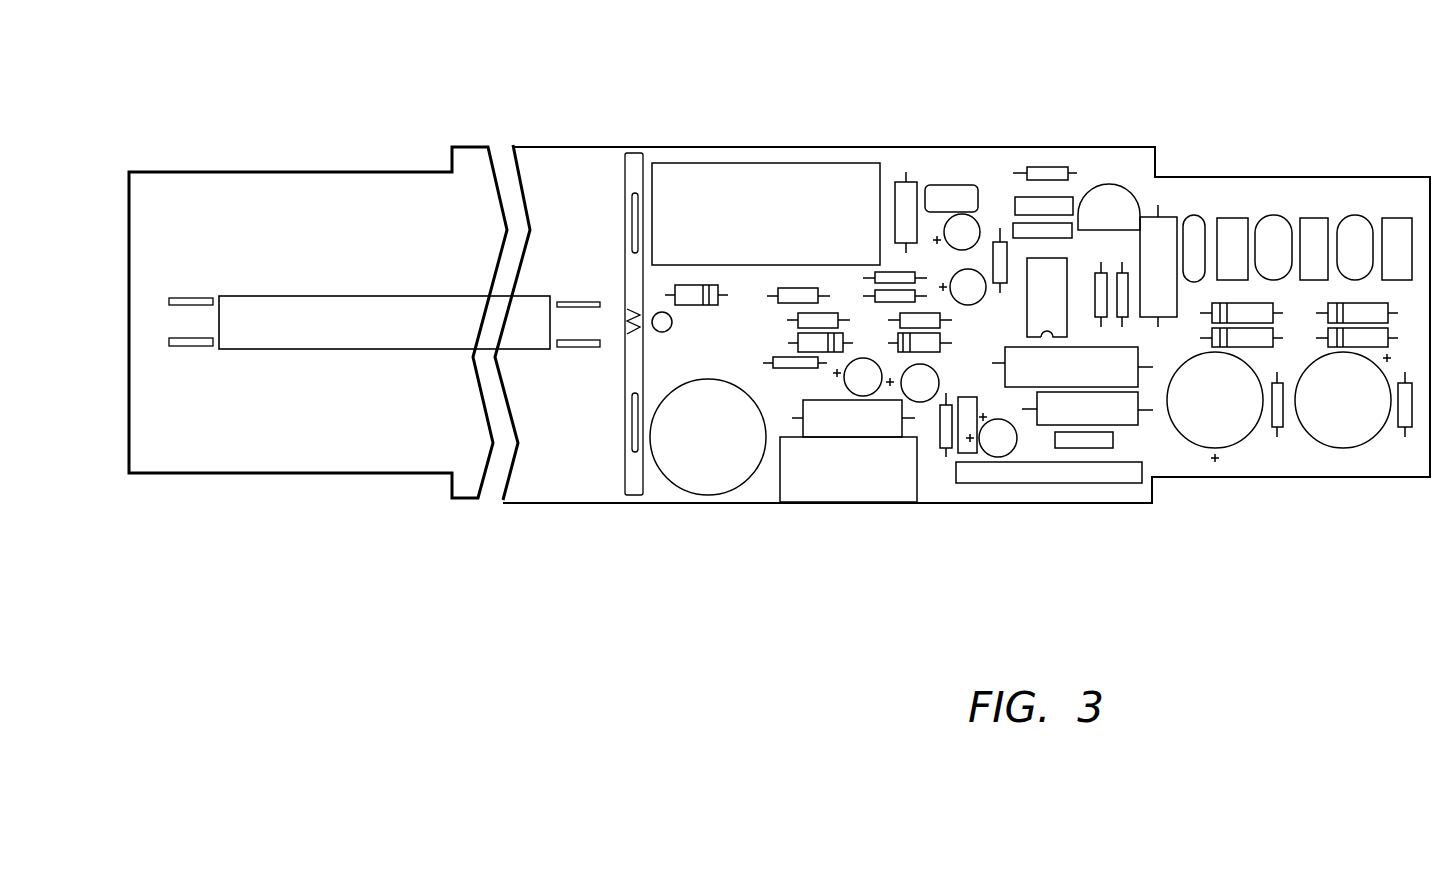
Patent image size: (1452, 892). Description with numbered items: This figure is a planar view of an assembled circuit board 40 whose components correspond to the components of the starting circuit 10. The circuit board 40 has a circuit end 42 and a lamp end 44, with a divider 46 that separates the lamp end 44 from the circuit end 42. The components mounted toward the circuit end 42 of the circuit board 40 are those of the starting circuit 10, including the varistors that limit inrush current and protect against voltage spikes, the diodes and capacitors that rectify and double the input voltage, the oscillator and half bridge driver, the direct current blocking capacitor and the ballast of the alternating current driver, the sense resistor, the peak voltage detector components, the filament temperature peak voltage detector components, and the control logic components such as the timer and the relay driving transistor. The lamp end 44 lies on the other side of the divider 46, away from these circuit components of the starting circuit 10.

The starting circuit 10 is at (1102, 140).
The circuit board 40 is at (485, 583).
The circuit end 42 is at (1232, 478).
The lamp end 44 is at (375, 174).
The divider 46 is at (637, 174).